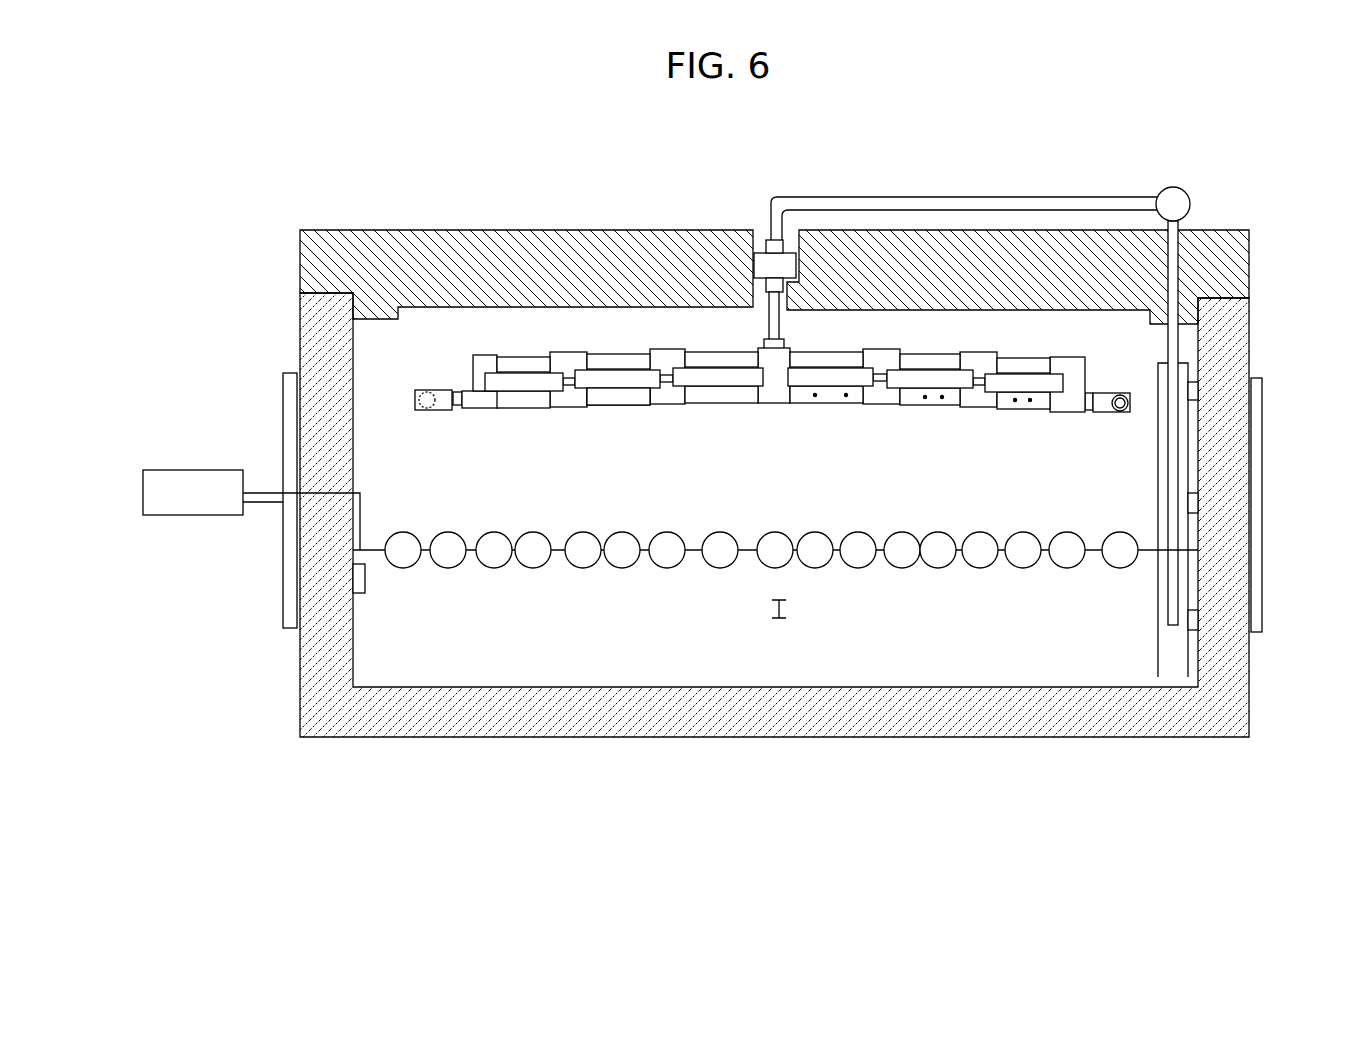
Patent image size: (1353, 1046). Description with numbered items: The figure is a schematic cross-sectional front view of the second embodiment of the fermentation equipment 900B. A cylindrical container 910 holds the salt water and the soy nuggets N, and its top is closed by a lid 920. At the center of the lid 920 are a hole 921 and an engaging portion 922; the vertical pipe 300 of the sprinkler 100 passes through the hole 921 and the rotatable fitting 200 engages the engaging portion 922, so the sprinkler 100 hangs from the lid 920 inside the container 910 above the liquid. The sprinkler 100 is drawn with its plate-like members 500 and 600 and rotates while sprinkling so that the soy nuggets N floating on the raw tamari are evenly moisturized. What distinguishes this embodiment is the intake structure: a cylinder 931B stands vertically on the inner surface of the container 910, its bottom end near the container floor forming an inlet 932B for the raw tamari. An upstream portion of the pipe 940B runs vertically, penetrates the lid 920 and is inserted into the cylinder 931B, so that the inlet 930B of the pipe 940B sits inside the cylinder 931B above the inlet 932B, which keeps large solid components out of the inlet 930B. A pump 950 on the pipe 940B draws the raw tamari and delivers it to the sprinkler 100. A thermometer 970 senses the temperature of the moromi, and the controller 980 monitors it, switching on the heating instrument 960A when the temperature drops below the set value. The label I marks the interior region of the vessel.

The fermentation equipment 900B is at (722, 454).
The container 910 is at (296, 737).
The lid 920 is at (513, 224).
The hole 921 is at (765, 307).
The engaging portion 922 is at (762, 232).
The rotatable fitting 200 is at (767, 263).
The vertical pipe 300 is at (778, 323).
The sprinkler 100 is at (772, 424).
The lower plate 500 is at (618, 396).
The upper plate 600 is at (530, 360).
The pipe 940B is at (1001, 192).
The pump 950 is at (1188, 194).
The inlet 930B is at (1158, 622).
The cylinder 931B is at (1158, 492).
The inlet 932B is at (1170, 677).
The heating instrument 960A is at (287, 385).
The thermometer 970 is at (367, 580).
The controller 980 is at (205, 468).
The soy nuggets N is at (900, 533).
The interior space I is at (779, 609).